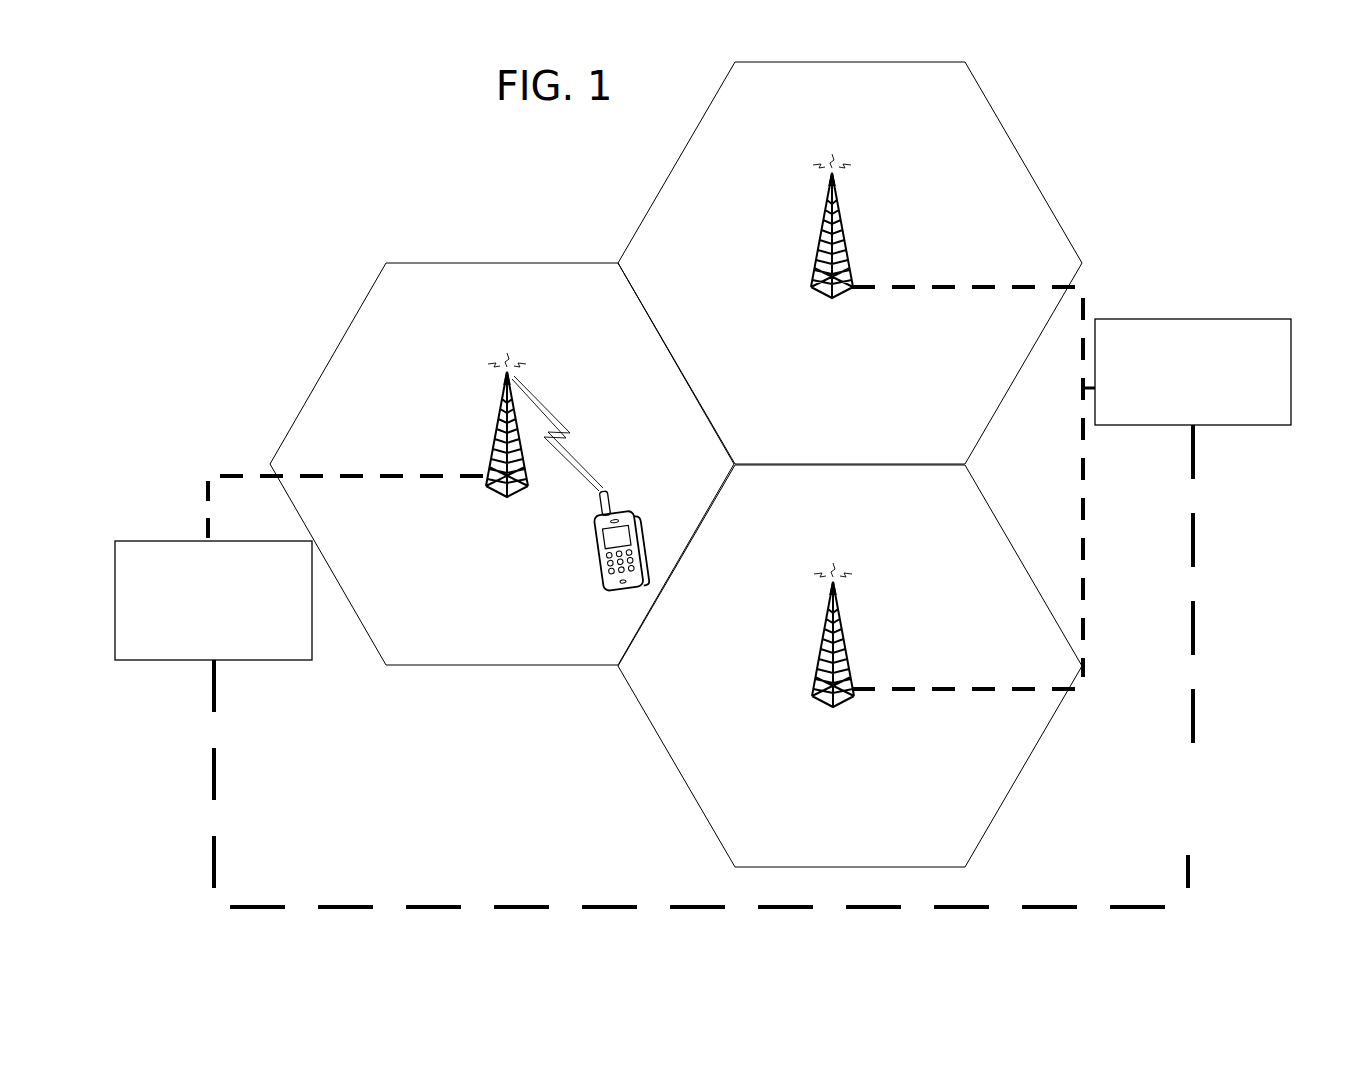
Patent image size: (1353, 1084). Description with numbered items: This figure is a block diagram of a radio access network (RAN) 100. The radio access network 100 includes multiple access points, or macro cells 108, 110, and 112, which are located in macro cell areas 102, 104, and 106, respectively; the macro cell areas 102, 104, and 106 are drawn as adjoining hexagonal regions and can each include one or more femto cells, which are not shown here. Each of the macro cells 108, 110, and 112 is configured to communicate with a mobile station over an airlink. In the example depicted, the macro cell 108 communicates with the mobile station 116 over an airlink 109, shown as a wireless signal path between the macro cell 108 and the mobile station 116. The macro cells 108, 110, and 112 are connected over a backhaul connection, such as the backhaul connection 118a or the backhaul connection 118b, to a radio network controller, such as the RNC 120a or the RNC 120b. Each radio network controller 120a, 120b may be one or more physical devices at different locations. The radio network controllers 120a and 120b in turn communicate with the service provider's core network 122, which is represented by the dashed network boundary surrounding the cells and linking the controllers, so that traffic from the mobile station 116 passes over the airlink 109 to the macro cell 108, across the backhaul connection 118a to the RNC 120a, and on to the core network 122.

The radio access network 100 is at (430, 143).
The macro cell area 102 is at (328, 338).
The macro cell area 104 is at (1010, 120).
The macro cell area 106 is at (648, 771).
The macro cell 108 is at (507, 492).
The airlink 109 is at (564, 428).
The macro cell 110 is at (832, 298).
The macro cell 112 is at (833, 703).
The mobile station 116 is at (587, 590).
The backhaul connection 118a is at (206, 494).
The backhaul connection 118b is at (1083, 590).
The radio network controller 120a is at (213, 600).
The radio network controller 120b is at (1193, 372).
The service provider's core network 122 is at (1176, 756).